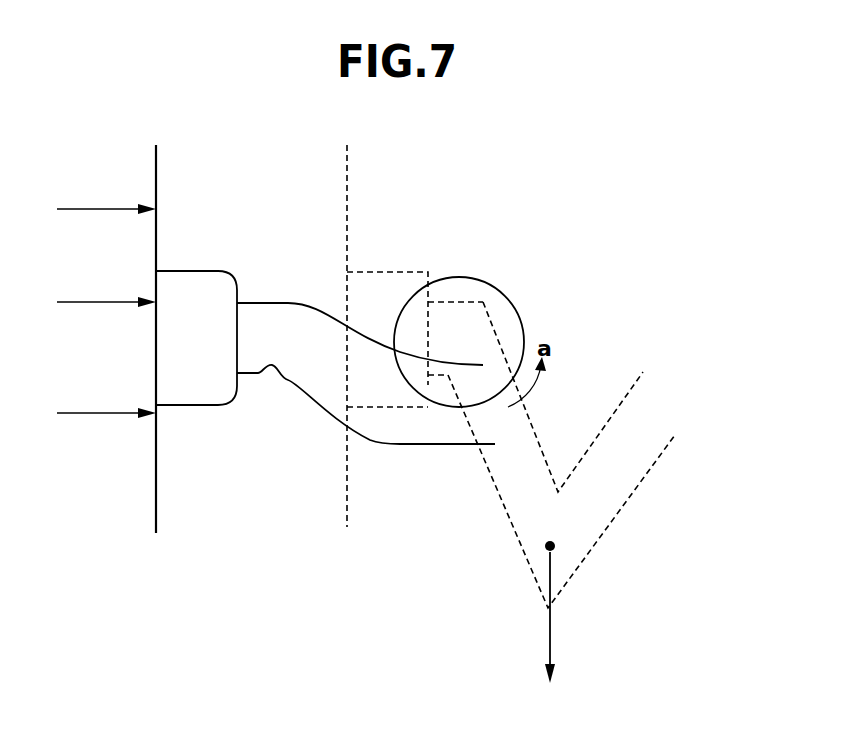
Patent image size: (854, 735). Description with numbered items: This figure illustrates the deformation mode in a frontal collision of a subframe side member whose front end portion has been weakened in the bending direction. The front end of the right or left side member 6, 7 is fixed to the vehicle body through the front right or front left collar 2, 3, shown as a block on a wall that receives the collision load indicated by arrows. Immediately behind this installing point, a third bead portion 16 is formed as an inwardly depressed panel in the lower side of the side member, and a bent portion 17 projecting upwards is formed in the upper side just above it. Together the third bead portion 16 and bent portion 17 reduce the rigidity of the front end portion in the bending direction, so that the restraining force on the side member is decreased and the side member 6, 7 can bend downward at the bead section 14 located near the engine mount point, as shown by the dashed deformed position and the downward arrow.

The front right collar 2 is at (196, 300).
The front left collar 3 is at (197, 271).
The right side member 6 is at (556, 509).
The left side member 7 is at (386, 458).
The bead section 14 is at (572, 606).
The third bead portion 16 is at (268, 376).
The bent portion 17 is at (283, 303).